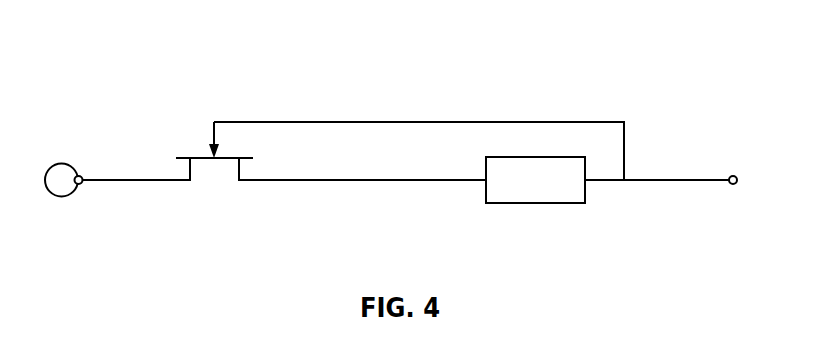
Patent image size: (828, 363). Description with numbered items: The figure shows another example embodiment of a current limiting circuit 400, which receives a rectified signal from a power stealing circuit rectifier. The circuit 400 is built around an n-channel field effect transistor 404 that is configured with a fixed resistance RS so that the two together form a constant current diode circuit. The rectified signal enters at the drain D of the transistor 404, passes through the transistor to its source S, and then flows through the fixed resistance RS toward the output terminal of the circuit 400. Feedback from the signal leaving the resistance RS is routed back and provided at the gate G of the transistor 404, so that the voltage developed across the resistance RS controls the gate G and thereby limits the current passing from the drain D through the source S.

The current limiting circuit 400 is at (158, 76).
The n-channel field effect transistor 404 is at (162, 181).
The drain D is at (137, 187).
The gate G is at (210, 136).
The source S is at (362, 187).
The fixed resistance RS is at (535, 201).